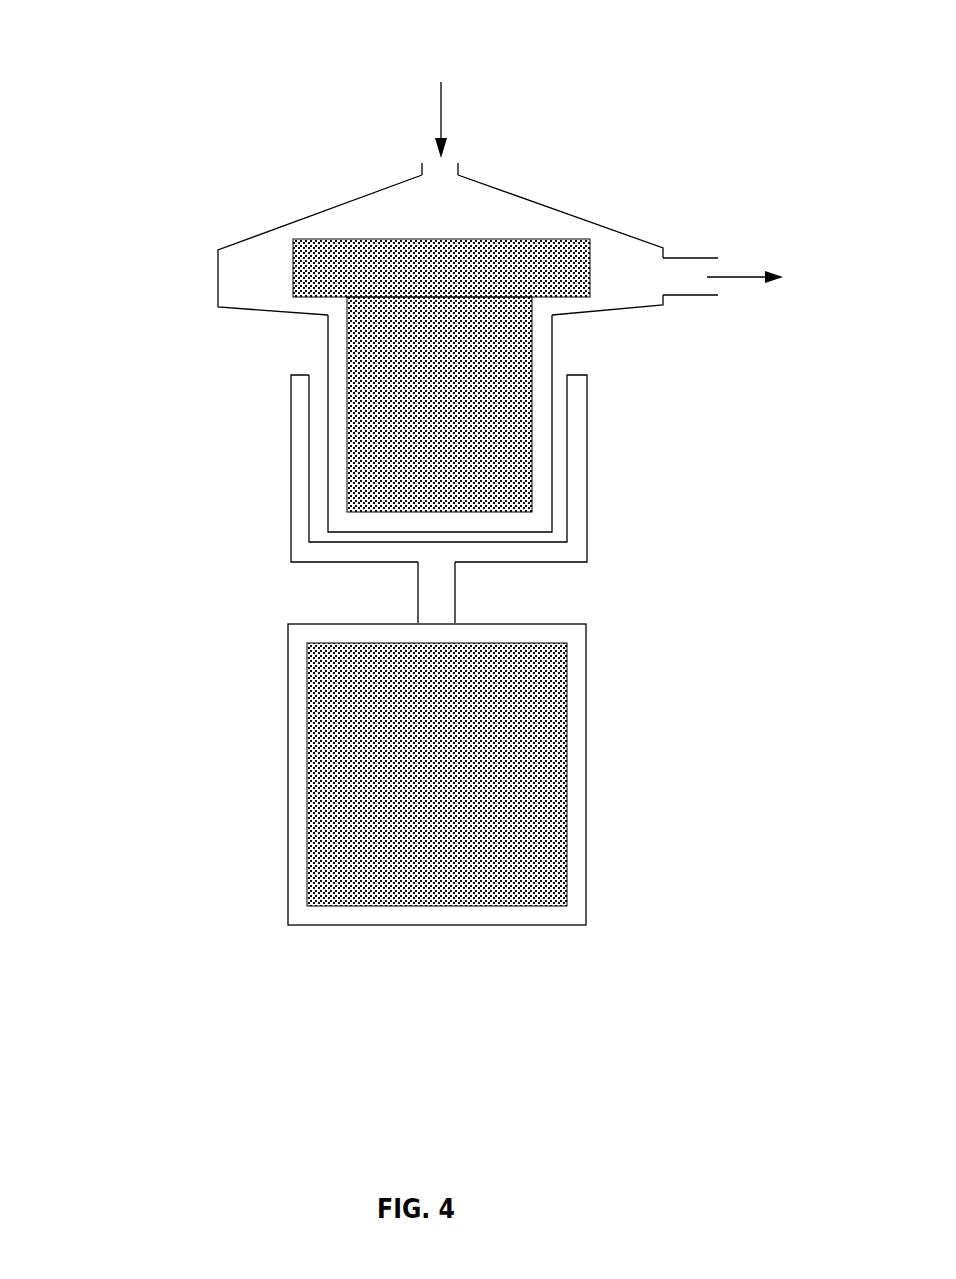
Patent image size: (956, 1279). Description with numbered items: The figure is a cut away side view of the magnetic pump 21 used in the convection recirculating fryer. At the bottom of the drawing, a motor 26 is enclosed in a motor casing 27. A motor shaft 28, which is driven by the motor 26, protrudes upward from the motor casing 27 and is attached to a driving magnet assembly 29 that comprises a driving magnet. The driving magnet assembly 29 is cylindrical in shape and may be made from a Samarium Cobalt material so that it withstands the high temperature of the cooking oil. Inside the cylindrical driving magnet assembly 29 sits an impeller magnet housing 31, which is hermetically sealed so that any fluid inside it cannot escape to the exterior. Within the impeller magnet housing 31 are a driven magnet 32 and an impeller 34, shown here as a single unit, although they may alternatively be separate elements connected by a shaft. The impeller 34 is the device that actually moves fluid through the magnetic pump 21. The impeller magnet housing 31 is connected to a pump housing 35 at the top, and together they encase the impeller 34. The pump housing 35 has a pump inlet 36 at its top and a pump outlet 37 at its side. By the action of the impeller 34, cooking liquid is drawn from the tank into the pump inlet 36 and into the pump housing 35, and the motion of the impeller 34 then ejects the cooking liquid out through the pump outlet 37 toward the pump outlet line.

The magnetic pump 21 is at (132, 116).
The motor 26 is at (452, 842).
The motor casing 27 is at (586, 877).
The motor shaft 28 is at (418, 598).
The driving magnet assembly 29 is at (587, 510).
The impeller magnet housing 31 is at (328, 343).
The driven magnet 32 is at (454, 450).
The impeller 34 is at (455, 282).
The pump housing 35 is at (240, 240).
The pump inlet 36 is at (441, 173).
The pump outlet 37 is at (702, 257).